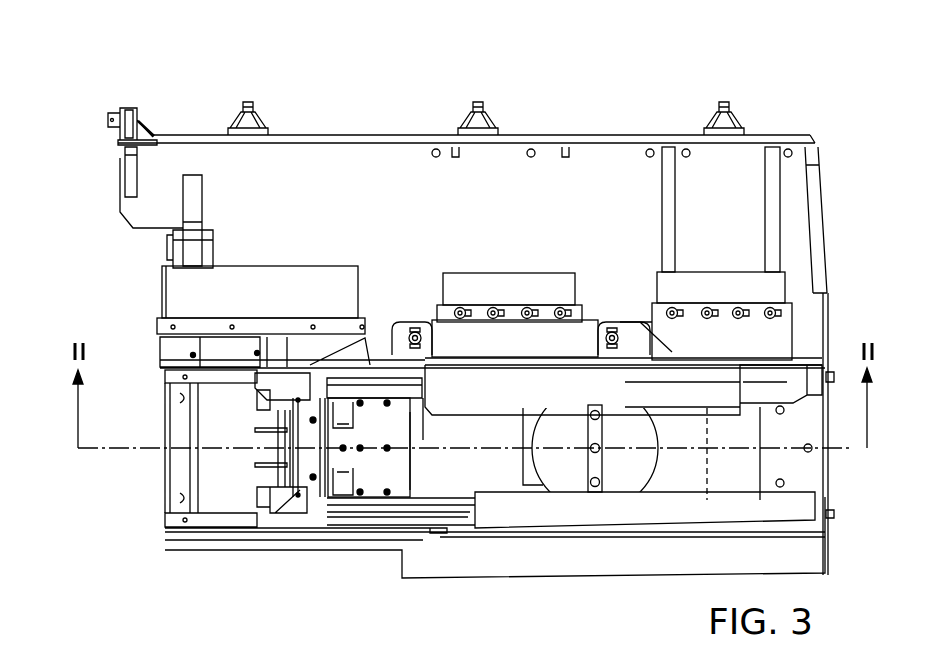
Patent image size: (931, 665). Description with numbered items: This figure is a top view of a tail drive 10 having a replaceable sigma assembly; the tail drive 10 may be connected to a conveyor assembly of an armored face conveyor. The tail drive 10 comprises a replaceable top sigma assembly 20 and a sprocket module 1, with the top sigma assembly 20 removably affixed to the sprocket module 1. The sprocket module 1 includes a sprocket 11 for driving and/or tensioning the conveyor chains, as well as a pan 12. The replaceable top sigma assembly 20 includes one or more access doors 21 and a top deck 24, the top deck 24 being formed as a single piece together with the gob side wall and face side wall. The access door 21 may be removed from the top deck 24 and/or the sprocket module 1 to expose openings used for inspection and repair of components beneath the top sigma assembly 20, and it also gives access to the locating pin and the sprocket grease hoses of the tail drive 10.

The sprocket module 1 is at (640, 585).
The tail drive 10 is at (75, 178).
The sprocket 11 is at (272, 462).
The pan 12 is at (565, 440).
The replaceable top sigma assembly 20 is at (373, 568).
The access door 21 is at (348, 476).
The top deck 24 is at (368, 480).